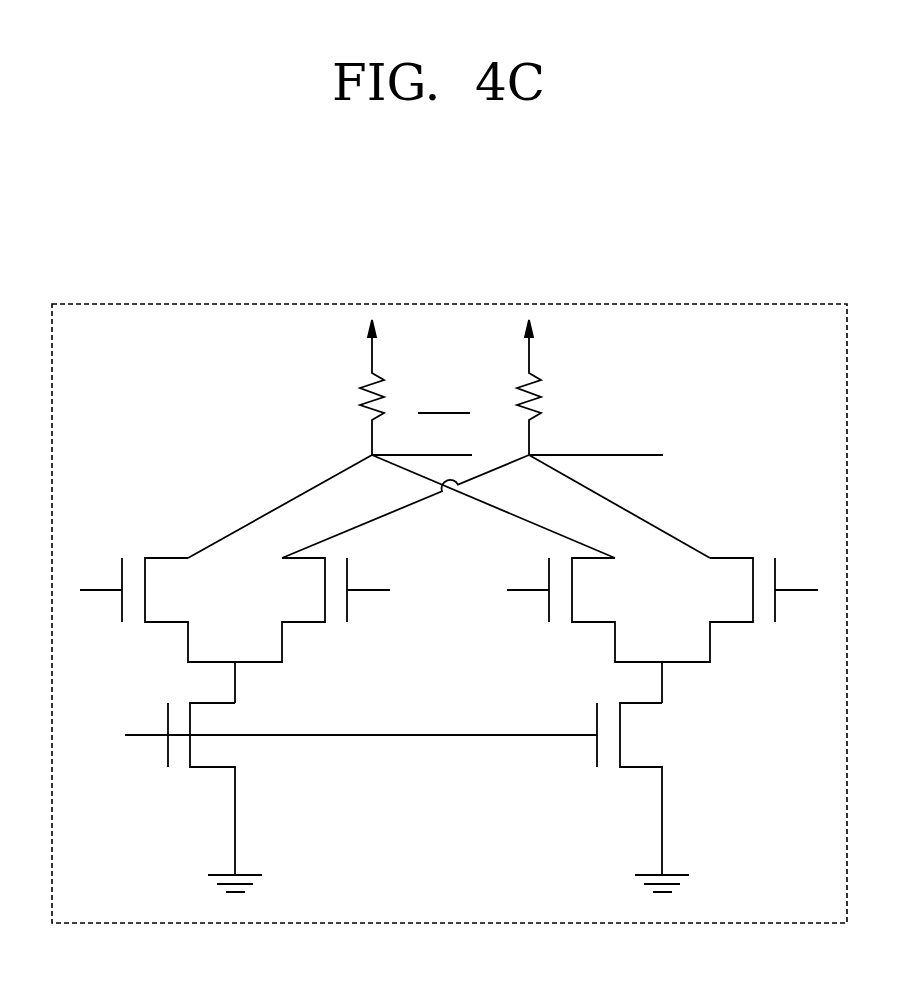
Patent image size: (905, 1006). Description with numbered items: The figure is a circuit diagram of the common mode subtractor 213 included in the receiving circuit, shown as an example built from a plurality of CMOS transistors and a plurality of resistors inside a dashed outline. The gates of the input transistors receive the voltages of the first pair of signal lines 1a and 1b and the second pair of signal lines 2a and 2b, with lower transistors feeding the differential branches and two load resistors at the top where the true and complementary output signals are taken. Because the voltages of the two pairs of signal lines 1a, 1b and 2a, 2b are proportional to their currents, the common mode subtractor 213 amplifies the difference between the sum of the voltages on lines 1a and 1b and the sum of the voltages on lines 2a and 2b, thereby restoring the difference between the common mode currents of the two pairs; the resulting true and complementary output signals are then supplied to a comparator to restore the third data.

The common mode subtractor 213 is at (482, 923).
The first signal line of the first pair of signal lines 1a is at (101, 591).
The first signal line of the second pair of signal lines 2a is at (368, 591).
The second signal line of the first pair of signal lines 1b is at (528, 591).
The second signal line of the second pair of signal lines 2b is at (798, 591).